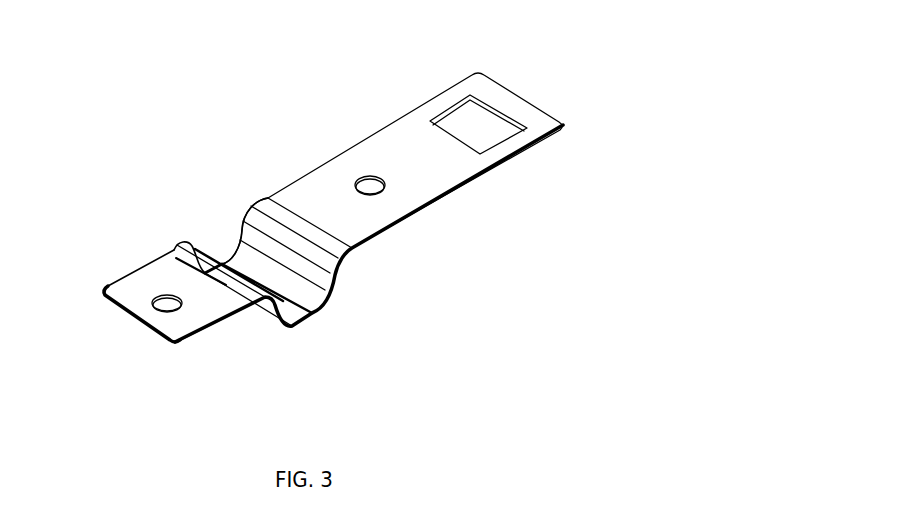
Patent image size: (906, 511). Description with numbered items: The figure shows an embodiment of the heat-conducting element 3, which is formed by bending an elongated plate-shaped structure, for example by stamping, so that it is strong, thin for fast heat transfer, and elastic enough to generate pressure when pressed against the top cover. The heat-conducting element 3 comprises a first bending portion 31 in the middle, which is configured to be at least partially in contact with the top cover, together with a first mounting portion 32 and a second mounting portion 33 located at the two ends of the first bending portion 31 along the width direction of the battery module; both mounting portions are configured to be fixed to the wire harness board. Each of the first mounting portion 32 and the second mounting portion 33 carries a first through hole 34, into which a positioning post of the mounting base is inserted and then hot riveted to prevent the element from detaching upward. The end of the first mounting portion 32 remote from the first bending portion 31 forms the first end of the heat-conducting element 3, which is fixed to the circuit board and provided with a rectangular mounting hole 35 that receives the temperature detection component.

The heat-conducting element 3 is at (310, 220).
The first bending portion 31 is at (250, 256).
The first mounting portion 32 is at (382, 147).
The second mounting portion 33 is at (137, 287).
The first through hole 34 is at (385, 187).
The mounting hole 35 is at (487, 118).